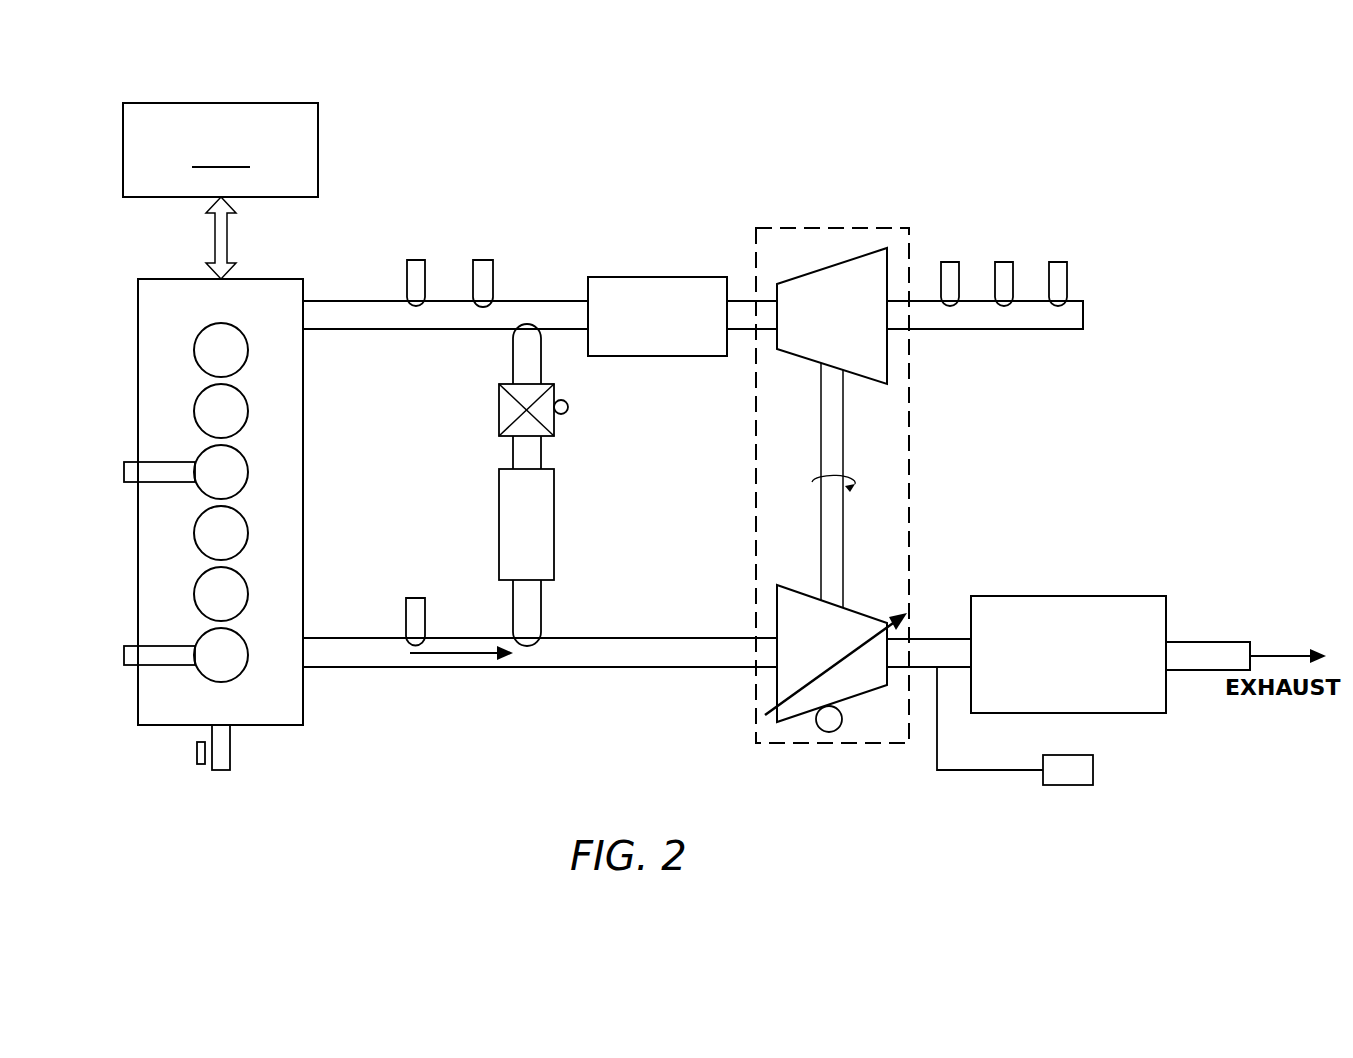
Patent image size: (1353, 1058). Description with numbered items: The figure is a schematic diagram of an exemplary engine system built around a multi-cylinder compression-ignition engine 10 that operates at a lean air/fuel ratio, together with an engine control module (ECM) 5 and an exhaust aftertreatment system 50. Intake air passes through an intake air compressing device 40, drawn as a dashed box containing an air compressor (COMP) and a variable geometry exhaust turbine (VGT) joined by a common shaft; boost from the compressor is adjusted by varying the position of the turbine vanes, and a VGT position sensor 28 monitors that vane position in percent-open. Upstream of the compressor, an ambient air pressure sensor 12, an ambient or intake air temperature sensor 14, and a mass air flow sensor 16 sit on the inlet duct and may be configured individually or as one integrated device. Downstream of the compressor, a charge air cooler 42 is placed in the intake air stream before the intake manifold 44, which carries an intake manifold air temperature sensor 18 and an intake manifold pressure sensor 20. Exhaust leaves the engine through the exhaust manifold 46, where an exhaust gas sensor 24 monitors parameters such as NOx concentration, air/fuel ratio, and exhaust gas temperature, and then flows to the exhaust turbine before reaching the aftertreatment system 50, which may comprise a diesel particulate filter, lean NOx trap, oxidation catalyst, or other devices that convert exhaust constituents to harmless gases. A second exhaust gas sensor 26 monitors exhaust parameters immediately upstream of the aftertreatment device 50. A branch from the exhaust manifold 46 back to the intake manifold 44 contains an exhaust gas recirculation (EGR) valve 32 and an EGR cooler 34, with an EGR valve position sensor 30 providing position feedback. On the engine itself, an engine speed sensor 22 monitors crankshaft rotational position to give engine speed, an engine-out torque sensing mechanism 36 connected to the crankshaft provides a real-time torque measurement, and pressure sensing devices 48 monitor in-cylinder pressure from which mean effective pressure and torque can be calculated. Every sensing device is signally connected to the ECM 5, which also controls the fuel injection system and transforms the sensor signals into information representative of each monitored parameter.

The engine control module (ECM) 5 is at (318, 153).
The engine 10 is at (303, 285).
The ambient air pressure sensor 12 is at (1060, 270).
The ambient or intake air temperature sensor 14 is at (1008, 270).
The mass air flow sensor 16 is at (953, 270).
The intake manifold air temperature sensor 18 is at (493, 273).
The intake manifold pressure sensor 20 is at (425, 273).
The engine speed sensor 22 is at (225, 752).
The exhaust gas sensor 24 is at (415, 606).
The second exhaust gas sensor 26 is at (1063, 773).
The VGT position sensor 28 is at (829, 732).
The EGR valve position sensor 30 is at (568, 410).
The exhaust gas recirculation (EGR) valve 32 is at (499, 421).
The EGR cooler 34 is at (543, 520).
The engine-out torque sensing mechanism 36 is at (197, 753).
The intake air compressing device 40 is at (820, 228).
The charge air cooler 42 is at (657, 277).
The intake manifold 44 is at (348, 320).
The exhaust manifold 46 is at (587, 658).
The pressure sensing devices 48 is at (163, 492).
The exhaust aftertreatment system 50 is at (1115, 603).